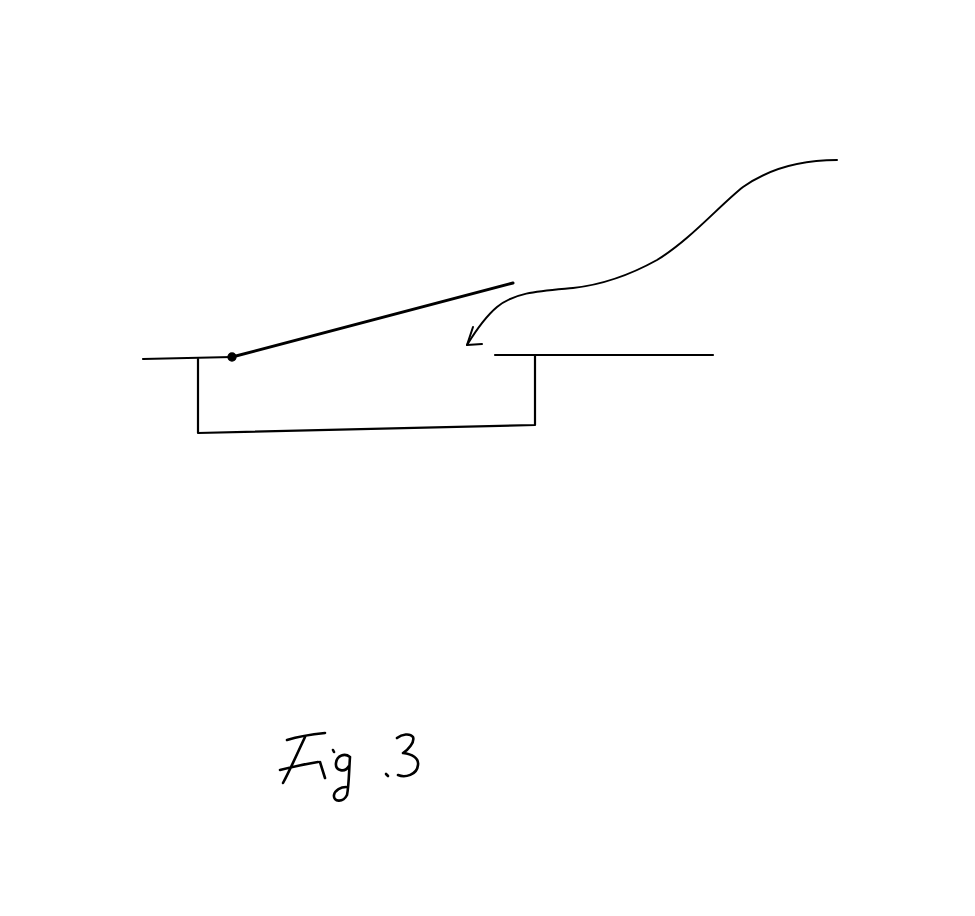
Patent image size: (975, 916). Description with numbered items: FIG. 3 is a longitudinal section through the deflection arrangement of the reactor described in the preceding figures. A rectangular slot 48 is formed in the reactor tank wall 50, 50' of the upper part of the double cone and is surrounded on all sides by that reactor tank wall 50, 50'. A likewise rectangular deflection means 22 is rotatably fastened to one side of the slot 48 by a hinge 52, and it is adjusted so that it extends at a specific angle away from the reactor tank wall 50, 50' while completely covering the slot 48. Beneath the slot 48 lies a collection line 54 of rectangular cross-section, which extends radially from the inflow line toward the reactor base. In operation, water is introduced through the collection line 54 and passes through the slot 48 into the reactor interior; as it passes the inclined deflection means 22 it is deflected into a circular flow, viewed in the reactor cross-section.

The deflection means 22 is at (415, 305).
The rectangular slot 48 is at (863, 180).
The reactor tank wall 50 is at (711, 313).
The reactor tank wall 50' is at (128, 415).
The hinge 52 is at (232, 357).
The collection line 54 is at (522, 427).